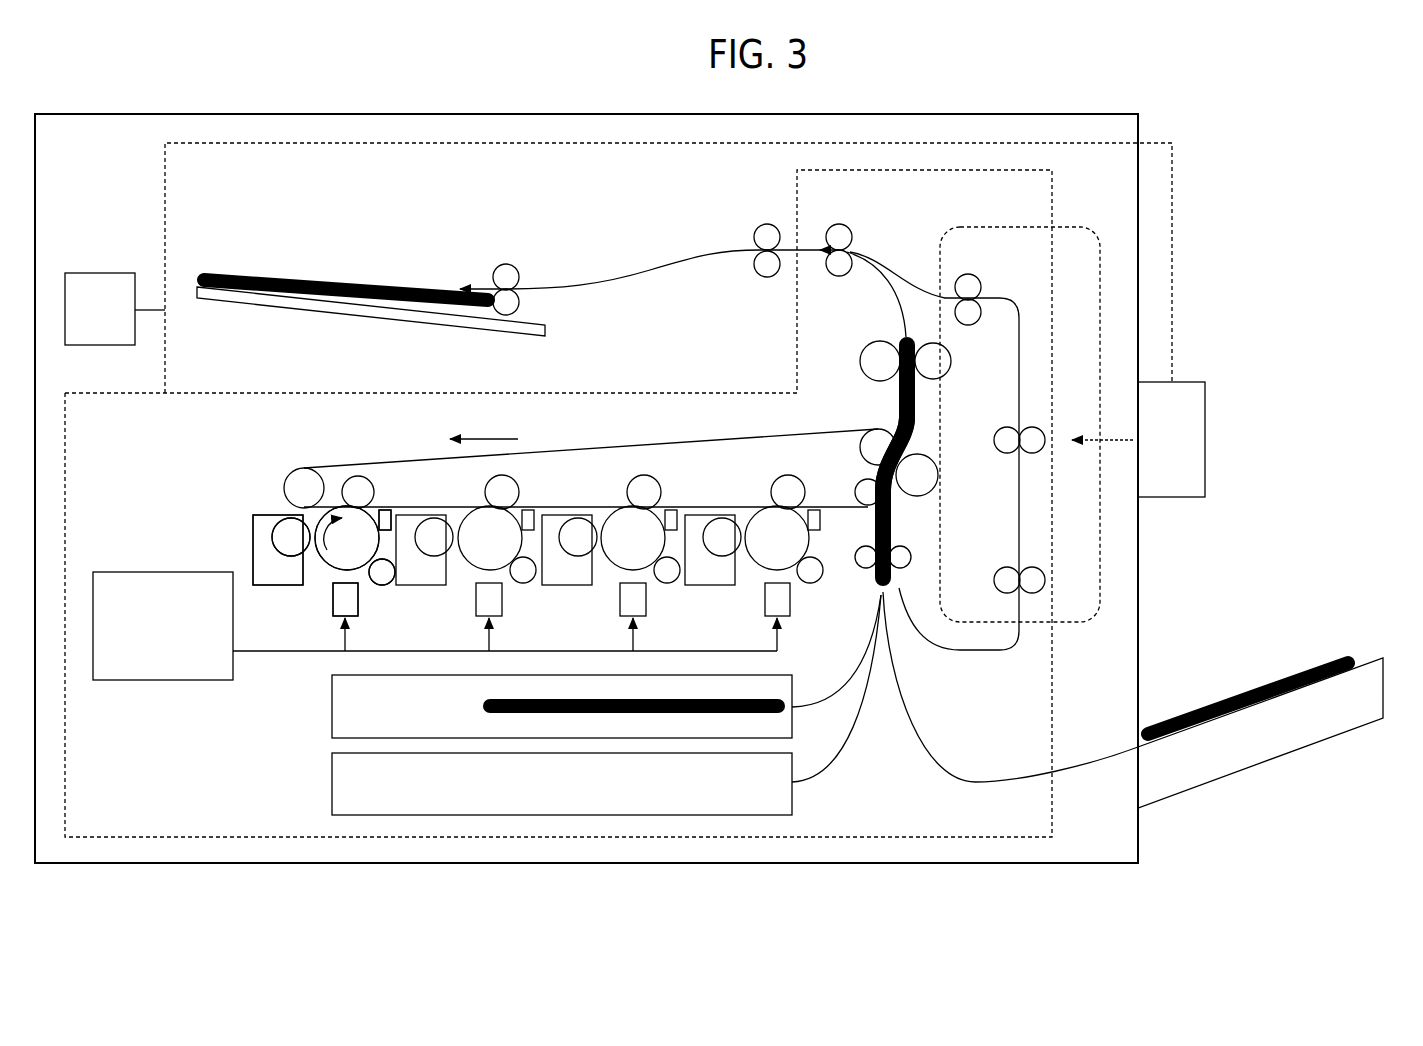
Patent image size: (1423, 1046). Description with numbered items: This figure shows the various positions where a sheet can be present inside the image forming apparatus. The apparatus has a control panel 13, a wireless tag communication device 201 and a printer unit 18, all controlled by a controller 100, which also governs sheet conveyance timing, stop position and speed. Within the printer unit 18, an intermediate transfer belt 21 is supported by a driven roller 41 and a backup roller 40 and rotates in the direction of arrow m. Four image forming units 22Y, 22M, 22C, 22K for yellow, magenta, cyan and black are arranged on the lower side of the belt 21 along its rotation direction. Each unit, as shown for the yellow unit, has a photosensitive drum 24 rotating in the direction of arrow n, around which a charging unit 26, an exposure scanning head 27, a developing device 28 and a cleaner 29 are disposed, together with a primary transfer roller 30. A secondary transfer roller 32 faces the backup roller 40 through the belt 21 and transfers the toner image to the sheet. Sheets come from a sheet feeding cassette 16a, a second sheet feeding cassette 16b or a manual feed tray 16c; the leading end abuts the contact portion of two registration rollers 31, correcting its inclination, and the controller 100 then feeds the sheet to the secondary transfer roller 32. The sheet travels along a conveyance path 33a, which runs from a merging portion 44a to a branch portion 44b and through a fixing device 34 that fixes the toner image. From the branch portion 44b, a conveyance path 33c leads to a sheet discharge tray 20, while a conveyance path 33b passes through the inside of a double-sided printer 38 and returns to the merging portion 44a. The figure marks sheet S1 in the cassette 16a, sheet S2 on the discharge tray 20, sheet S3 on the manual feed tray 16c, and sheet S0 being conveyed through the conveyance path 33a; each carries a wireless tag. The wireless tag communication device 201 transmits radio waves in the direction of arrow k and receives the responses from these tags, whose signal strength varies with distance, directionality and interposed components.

The control panel 13 is at (125, 273).
The printer unit 18 is at (115, 393).
The sheet discharge tray 20 is at (228, 300).
The intermediate transfer belt 21 is at (657, 442).
The image forming unit 22Y is at (368, 584).
The image forming unit 22M is at (509, 584).
The image forming unit 22C is at (652, 584).
The image forming unit 22K is at (755, 584).
The photosensitive drum 24 is at (320, 520).
The charging unit 26 is at (394, 578).
The exposure scanning head 27 is at (333, 602).
The developing device 28 is at (253, 536).
The cleaner 29 is at (387, 510).
The primary transfer roller 30 is at (358, 476).
The registration rollers 31 is at (866, 570).
The secondary transfer roller 32 is at (912, 496).
The conveyance path 33a is at (895, 403).
The conveyance path 33b is at (913, 287).
The conveyance path 33c is at (790, 248).
The fixing device 34 is at (893, 330).
The double-sided printer 38 is at (1067, 227).
The backup roller 40 is at (862, 447).
The driven roller 41 is at (300, 470).
The merging portion 44a is at (884, 628).
The branch portion 44b is at (880, 262).
The controller 100 is at (122, 572).
The wireless tag communication device 201 is at (1188, 382).
The sheet feeding cassette 16a is at (332, 702).
The sheet feeding cassette 16b is at (332, 777).
The manual feed tray 16c is at (1377, 658).
The sheet S0 is at (876, 520).
The sheet S1 is at (488, 706).
The sheet S2 is at (344, 277).
The sheet S3 is at (1288, 674).
The arrow k direction k is at (1102, 425).
The arrow m direction m is at (482, 439).
The arrow n direction n is at (326, 551).